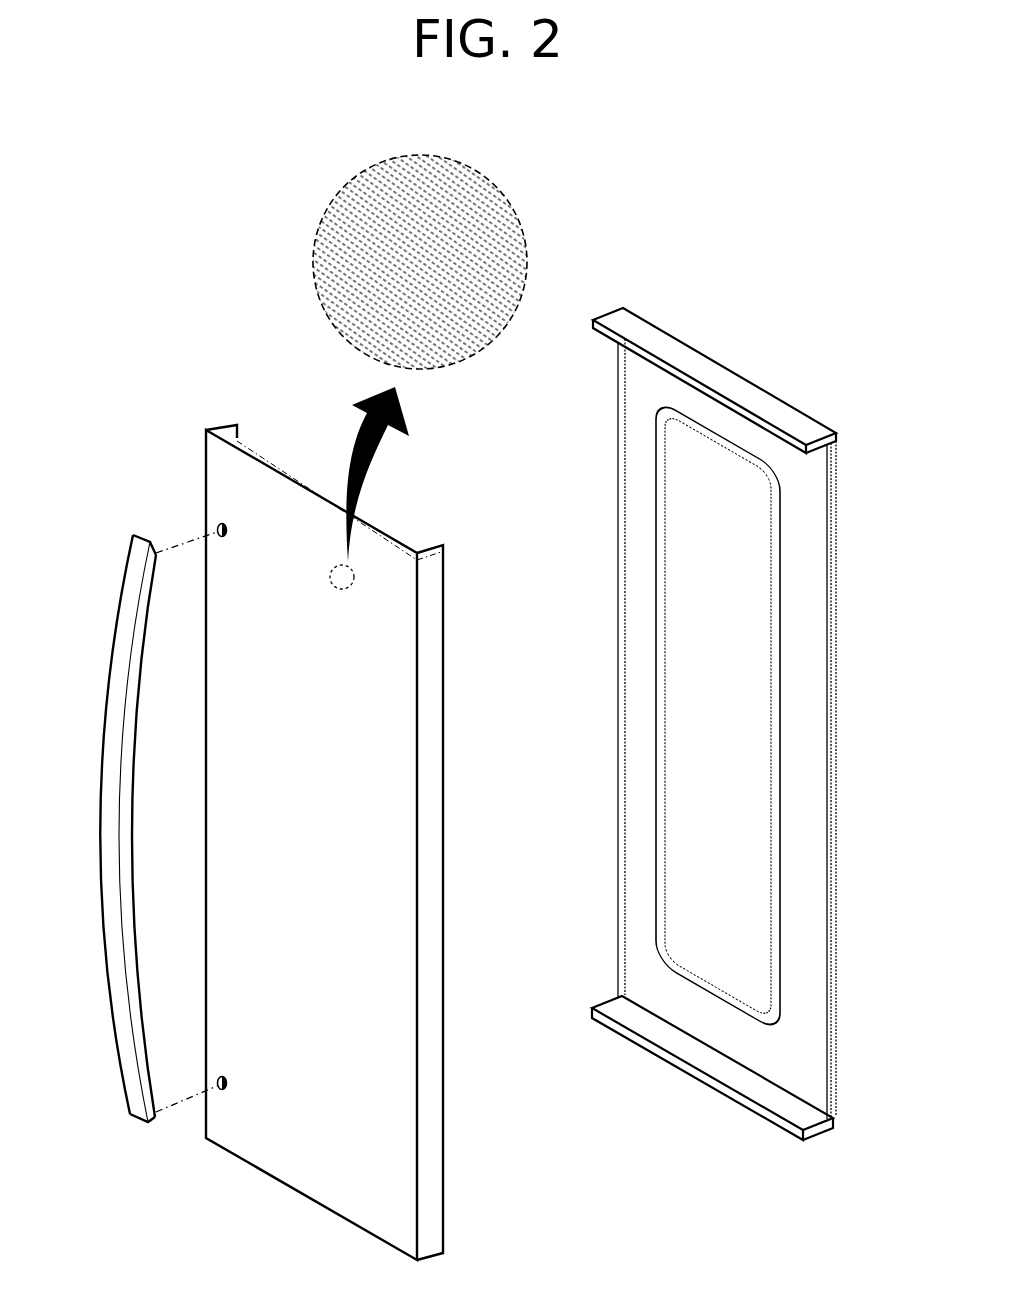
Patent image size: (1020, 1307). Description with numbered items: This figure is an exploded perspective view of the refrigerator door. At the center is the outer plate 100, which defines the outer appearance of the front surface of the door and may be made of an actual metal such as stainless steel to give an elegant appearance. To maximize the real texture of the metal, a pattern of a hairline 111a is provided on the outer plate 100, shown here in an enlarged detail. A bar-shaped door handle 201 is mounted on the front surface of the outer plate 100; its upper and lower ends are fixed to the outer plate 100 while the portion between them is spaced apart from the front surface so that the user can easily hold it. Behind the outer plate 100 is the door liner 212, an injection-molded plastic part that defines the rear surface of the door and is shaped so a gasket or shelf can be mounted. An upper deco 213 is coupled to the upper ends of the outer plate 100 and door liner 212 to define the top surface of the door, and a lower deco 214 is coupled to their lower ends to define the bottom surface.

The outer plate 100 is at (287, 488).
The hairline 111a is at (340, 296).
The door handle 201 is at (105, 750).
The door liner 212 is at (778, 686).
The upper deco 213 is at (672, 338).
The lower deco 214 is at (726, 1094).